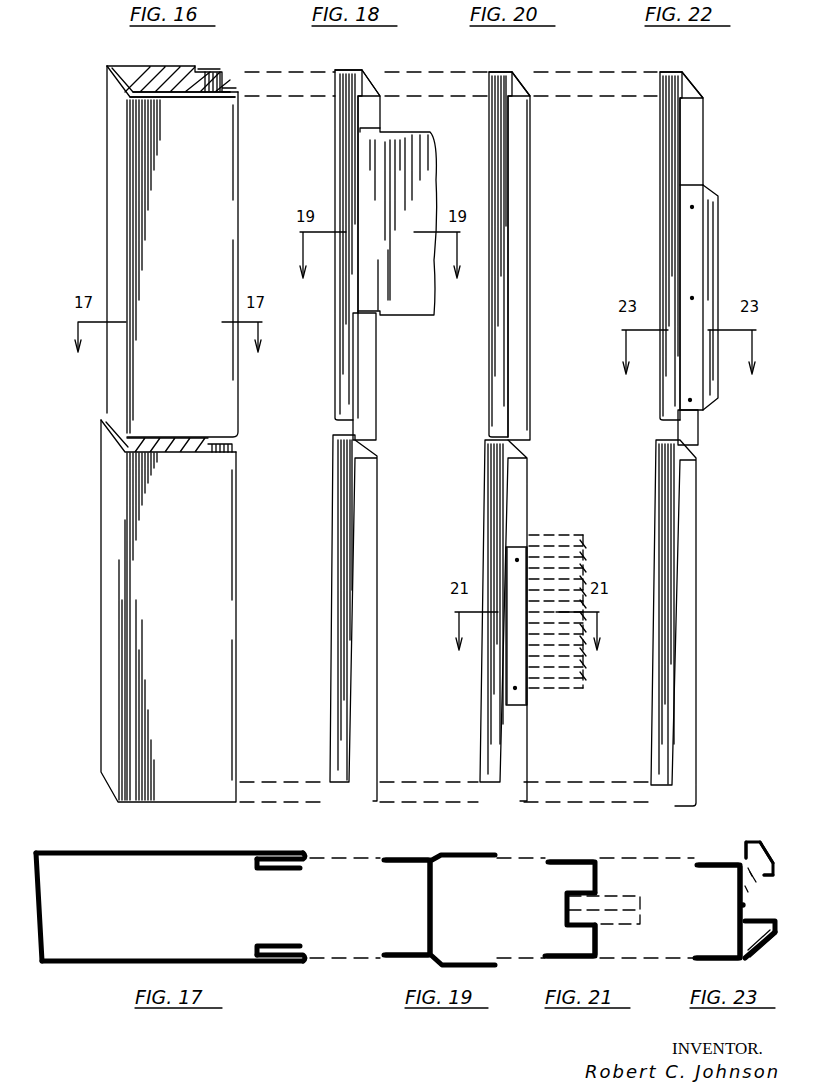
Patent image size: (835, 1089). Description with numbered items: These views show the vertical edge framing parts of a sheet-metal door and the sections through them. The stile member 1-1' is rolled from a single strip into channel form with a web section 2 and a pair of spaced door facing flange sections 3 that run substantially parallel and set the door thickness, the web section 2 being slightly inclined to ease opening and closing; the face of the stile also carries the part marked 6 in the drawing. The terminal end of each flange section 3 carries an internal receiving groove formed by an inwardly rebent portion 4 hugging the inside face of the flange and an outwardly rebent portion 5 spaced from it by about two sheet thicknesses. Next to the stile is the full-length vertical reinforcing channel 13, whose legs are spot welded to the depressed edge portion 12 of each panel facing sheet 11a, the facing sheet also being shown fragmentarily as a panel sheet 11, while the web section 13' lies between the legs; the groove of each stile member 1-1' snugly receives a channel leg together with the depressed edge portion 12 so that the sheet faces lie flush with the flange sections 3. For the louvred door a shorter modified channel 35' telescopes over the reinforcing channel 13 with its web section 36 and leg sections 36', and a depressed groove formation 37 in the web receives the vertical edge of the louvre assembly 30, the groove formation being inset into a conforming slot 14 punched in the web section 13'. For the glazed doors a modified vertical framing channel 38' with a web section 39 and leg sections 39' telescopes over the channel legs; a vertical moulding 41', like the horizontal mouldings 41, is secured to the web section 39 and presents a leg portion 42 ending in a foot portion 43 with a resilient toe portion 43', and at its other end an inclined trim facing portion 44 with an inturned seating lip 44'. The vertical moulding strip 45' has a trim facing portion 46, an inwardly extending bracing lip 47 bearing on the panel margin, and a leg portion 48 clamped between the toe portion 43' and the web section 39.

In FIG. 16, the web section 2 is at (107, 205).
In FIG. 17, the web section 2 is at (37, 905).
In FIG. 16, the door facing flange section 3 is at (167, 68).
In FIG. 17, the door facing flange section 3 is at (222, 852).
In FIG. 16, the inwardly rebent portion 4 is at (212, 67).
In FIG. 17, the inwardly rebent portion 4 is at (306, 860).
In FIG. 16, the outwardly rebent portion 5 is at (222, 82).
In FIG. 17, the outwardly rebent portion 5 is at (280, 870).
In FIG. 16, the panel face 6 is at (138, 76).
In FIG. 17, the panel face 6 is at (74, 860).
In FIG. 16, the stile member 1-1' is at (82, 143).
In FIG. 17, the stile member 1-1' is at (146, 834).
In FIG. 19, the wall panel 11 is at (478, 854).
In FIG. 18, the panel facing sheet 11a is at (424, 460).
In FIG. 18, the depressed edge portion 12 is at (368, 166).
In FIG. 19, the depressed edge portion 12 is at (416, 855).
In FIG. 21, the depressed edge portion 12 is at (552, 960).
In FIG. 18, the vertical reinforcing channel 13 is at (366, 435).
In FIG. 19, the vertical reinforcing channel 13 is at (403, 907).
In FIG. 20, the vertical reinforcing channel 13 is at (520, 436).
In FIG. 21, the vertical reinforcing channel 13 is at (570, 909).
In FIG. 22, the vertical reinforcing channel 13 is at (677, 439).
In FIG. 23, the vertical reinforcing channel 13 is at (717, 911).
In FIG. 18, the web section 13' is at (388, 82).
In FIG. 19, the web section 13' is at (416, 907).
In FIG. 20, the web section 13' is at (537, 83).
In FIG. 21, the web section 13' is at (574, 940).
In FIG. 22, the web section 13' is at (710, 84).
In FIG. 23, the web section 13' is at (722, 911).
In FIG. 21, the slot 14 is at (586, 930).
In FIG. 20, the louvre assembly 30 is at (570, 530).
In FIG. 21, the louvre assembly 30 is at (635, 896).
In FIG. 20, the modified channel 35' is at (547, 641).
In FIG. 21, the modified channel 35' is at (619, 878).
In FIG. 21, the web section 36 is at (588, 969).
In FIG. 20, the leg section 36' is at (566, 626).
In FIG. 21, the leg section 36' is at (618, 867).
In FIG. 21, the depressed groove formation 37 is at (565, 910).
In FIG. 23, the modified vertical framing channel 38' is at (779, 885).
In FIG. 23, the web section 39 is at (776, 890).
In FIG. 22, the leg section 39' is at (662, 297).
In FIG. 23, the leg section 39' is at (702, 850).
In FIG. 22, the horizontal moulding 41 is at (734, 297).
In FIG. 23, the vertical moulding 41' is at (776, 955).
In FIG. 23, the leg portion 42 is at (776, 921).
In FIG. 23, the foot portion 43 is at (760, 909).
In FIG. 23, the toe portion 43' is at (762, 893).
In FIG. 23, the trim facing portion 44 is at (777, 945).
In FIG. 23, the seating lip 44' is at (759, 935).
In FIG. 23, the vertical moulding strip 45' is at (775, 848).
In FIG. 23, the trim facing portion 46 is at (765, 843).
In FIG. 23, the bracing lip 47 is at (770, 872).
In FIG. 23, the leg portion 48 is at (745, 850).